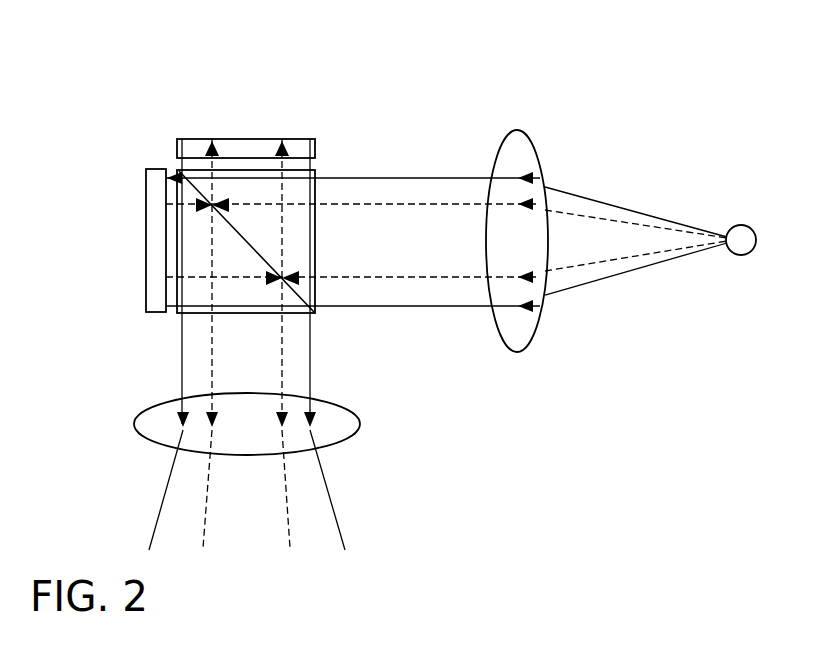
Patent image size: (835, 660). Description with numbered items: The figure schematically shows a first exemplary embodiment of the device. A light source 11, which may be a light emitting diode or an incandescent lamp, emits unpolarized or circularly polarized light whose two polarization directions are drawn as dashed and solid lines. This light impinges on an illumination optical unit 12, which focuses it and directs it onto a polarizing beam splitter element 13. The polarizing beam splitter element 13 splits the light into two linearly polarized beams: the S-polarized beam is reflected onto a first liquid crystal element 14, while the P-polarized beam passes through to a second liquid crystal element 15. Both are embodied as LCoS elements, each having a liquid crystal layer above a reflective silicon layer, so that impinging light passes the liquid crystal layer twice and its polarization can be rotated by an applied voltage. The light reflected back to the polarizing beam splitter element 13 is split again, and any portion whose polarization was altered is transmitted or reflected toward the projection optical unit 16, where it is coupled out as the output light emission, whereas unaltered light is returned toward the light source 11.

The light source 11 is at (755, 211).
The illumination optical unit 12 is at (561, 153).
The polarizing beam splitter element 13 is at (336, 158).
The first liquid crystal element 14 is at (252, 123).
The second liquid crystal element 15 is at (126, 251).
The projection optical unit 16 is at (356, 454).